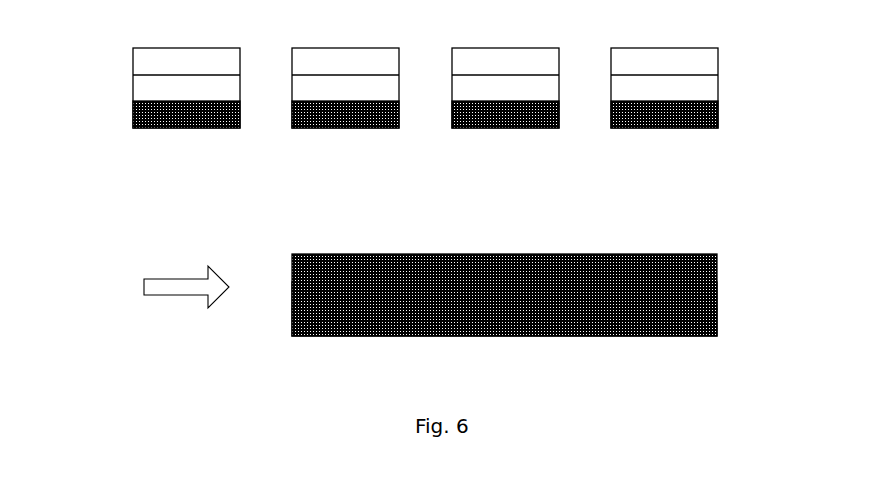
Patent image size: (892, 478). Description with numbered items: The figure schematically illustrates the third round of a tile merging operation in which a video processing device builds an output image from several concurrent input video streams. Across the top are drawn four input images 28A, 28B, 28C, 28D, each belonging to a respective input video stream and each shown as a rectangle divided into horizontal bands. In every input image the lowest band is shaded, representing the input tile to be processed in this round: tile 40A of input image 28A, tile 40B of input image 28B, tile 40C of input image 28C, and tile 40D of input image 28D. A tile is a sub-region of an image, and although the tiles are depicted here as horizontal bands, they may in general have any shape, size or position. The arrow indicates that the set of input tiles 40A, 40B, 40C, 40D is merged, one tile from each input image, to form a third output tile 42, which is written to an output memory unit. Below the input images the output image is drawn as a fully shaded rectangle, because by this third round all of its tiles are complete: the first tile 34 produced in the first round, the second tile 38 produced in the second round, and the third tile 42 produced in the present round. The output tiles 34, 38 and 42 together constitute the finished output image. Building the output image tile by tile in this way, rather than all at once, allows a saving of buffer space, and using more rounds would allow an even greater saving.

The tile of input image 28A 40A is at (133, 110).
The tile of input image 28B 40B is at (292, 110).
The tile of input image 28C 40C is at (452, 110).
The tile of input image 28D 40D is at (611, 110).
The input image 28A is at (185, 128).
The input image 28B is at (344, 128).
The input image 28C is at (504, 128).
The input image 28D is at (665, 128).
The first tile of the output image 34 is at (717, 268).
The second tile of the output image 38 is at (717, 293).
The third tile of the output image 42 is at (717, 320).